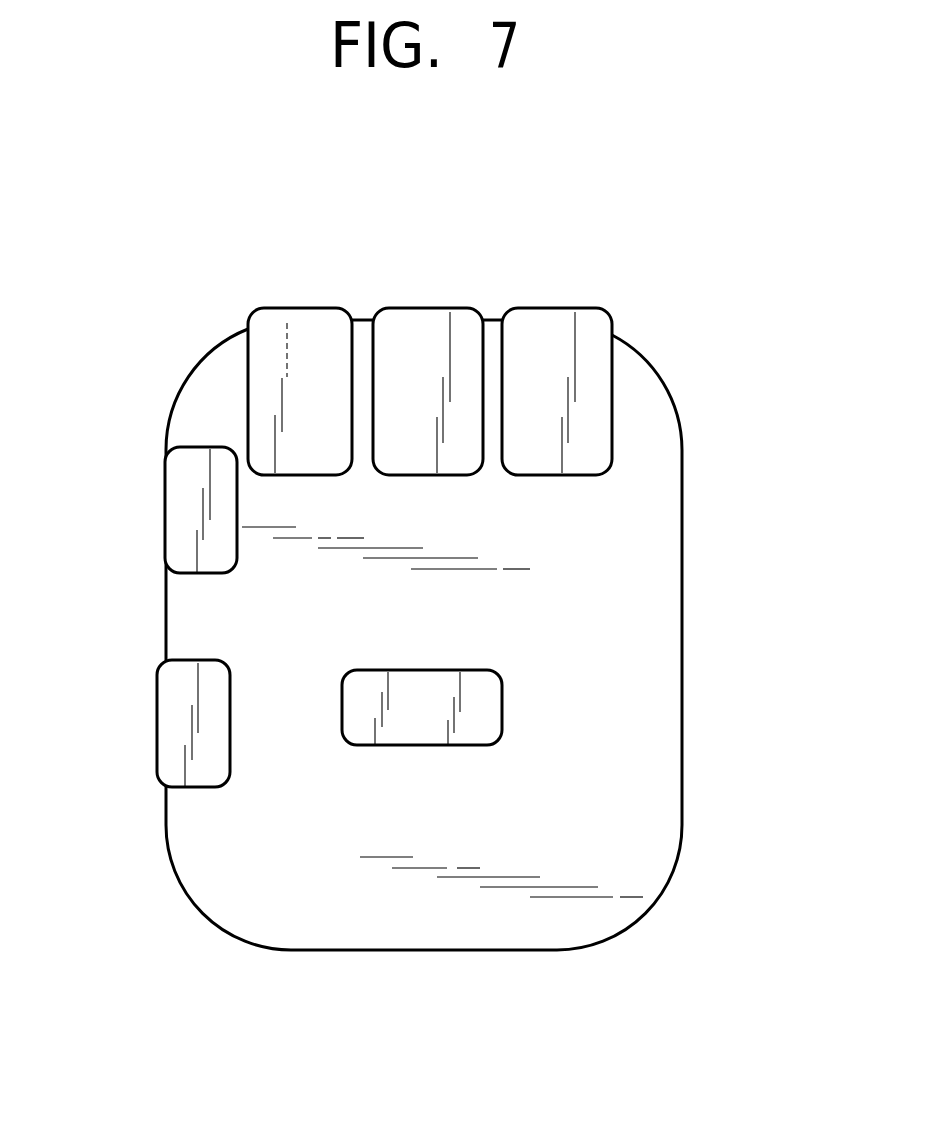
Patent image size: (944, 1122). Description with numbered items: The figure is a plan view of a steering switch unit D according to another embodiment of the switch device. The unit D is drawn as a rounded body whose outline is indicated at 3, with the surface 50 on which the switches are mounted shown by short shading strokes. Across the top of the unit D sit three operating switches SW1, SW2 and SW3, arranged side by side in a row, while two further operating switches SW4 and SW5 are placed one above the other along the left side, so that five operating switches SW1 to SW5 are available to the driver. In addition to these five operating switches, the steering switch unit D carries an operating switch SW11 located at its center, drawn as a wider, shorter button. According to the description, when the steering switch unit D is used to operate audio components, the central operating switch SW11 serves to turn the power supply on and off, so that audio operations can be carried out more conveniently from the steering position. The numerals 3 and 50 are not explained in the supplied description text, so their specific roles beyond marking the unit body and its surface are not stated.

The housing body 3 is at (243, 903).
The operation surface 50 is at (612, 788).
The operating switch SW1 is at (295, 347).
The operating switch SW2 is at (422, 347).
The operating switch SW3 is at (553, 347).
The operating switch SW4 is at (184, 483).
The operating switch SW5 is at (173, 714).
The operating switch SW11 is at (480, 703).
The steering switch unit D is at (663, 258).